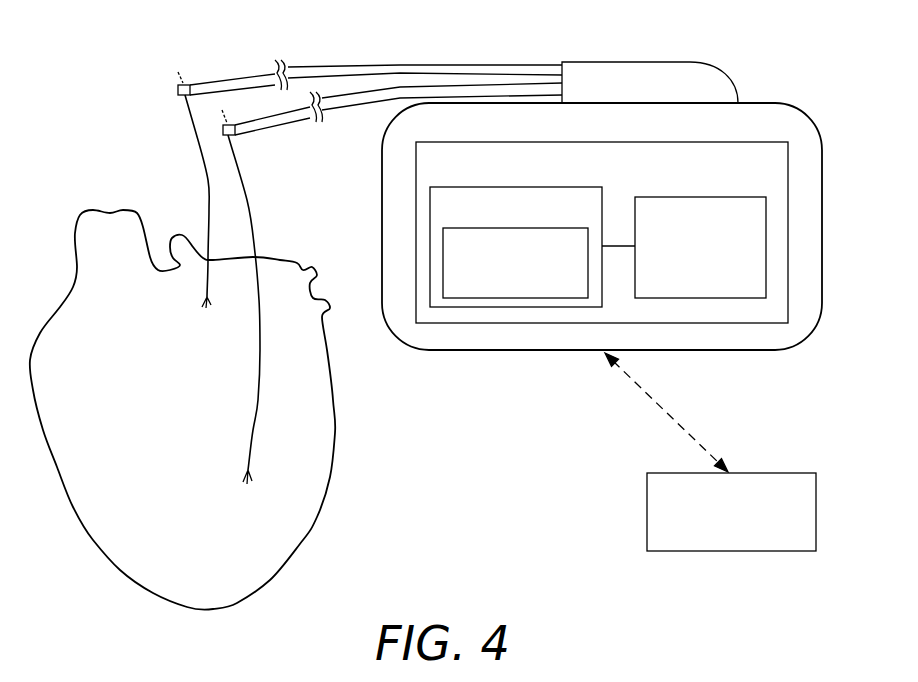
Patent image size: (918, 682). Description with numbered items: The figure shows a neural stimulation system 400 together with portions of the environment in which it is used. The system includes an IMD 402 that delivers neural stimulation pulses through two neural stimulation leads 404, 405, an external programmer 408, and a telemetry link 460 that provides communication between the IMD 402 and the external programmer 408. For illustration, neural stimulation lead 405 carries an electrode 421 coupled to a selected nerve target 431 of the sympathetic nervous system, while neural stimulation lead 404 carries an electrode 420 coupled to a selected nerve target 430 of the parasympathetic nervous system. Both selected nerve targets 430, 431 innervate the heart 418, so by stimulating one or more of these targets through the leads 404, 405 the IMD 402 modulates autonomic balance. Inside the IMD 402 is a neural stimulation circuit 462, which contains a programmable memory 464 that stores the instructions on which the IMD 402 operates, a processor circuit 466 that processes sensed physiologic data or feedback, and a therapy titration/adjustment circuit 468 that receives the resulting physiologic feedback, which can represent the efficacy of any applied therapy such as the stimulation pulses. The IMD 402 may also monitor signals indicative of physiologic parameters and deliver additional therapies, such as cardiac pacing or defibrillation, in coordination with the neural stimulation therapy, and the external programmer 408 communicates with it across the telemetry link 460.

The neural stimulation system 400 is at (730, 24).
The IMD 402 is at (772, 102).
The neural stimulation lead 404 is at (350, 110).
The neural stimulation lead 405 is at (362, 62).
The external programmer 408 is at (793, 473).
The heart 418 is at (335, 413).
The electrode 420 is at (222, 129).
The electrode 421 is at (177, 87).
The selected nerve target 430 is at (257, 233).
The selected nerve target 431 is at (207, 185).
The telemetry link 460 is at (663, 412).
The neural stimulation circuit 462 is at (705, 142).
The programmable memory 464 is at (473, 187).
The processor circuit 466 is at (483, 228).
The therapy titration/adjustment circuit 468 is at (727, 195).